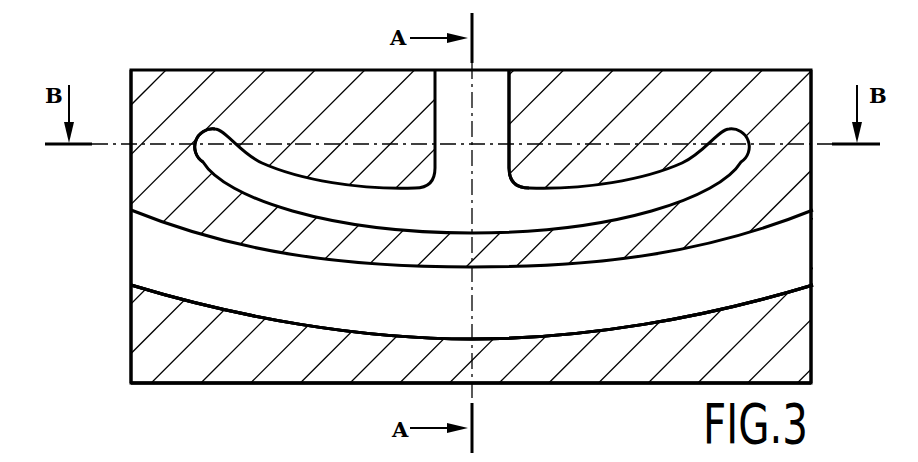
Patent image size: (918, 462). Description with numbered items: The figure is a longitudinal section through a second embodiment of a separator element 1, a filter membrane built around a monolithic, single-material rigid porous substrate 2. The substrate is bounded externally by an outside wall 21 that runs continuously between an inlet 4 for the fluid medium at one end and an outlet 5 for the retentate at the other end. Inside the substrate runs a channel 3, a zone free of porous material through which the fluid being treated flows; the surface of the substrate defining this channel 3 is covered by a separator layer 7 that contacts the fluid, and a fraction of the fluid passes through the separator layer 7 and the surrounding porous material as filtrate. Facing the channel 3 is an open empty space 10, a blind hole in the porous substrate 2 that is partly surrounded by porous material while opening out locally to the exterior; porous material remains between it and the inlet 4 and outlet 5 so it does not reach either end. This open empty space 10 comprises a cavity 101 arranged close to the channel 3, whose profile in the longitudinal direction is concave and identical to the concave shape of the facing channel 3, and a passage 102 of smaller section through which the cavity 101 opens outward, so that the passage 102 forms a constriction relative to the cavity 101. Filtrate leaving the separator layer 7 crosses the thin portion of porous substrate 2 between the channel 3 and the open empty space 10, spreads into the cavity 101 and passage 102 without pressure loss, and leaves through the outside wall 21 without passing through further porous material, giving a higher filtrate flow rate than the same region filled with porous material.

The separator element 1 is at (498, 193).
The porous substrate 2 is at (328, 370).
The outside wall 21 is at (471, 419).
The channel 3 is at (461, 322).
The inlet 4 is at (120, 262).
The outlet 5 is at (823, 267).
The separator layer 7 is at (305, 333).
The open empty space 10 is at (461, 210).
The cavity 101 is at (260, 178).
The passage 102 is at (508, 104).